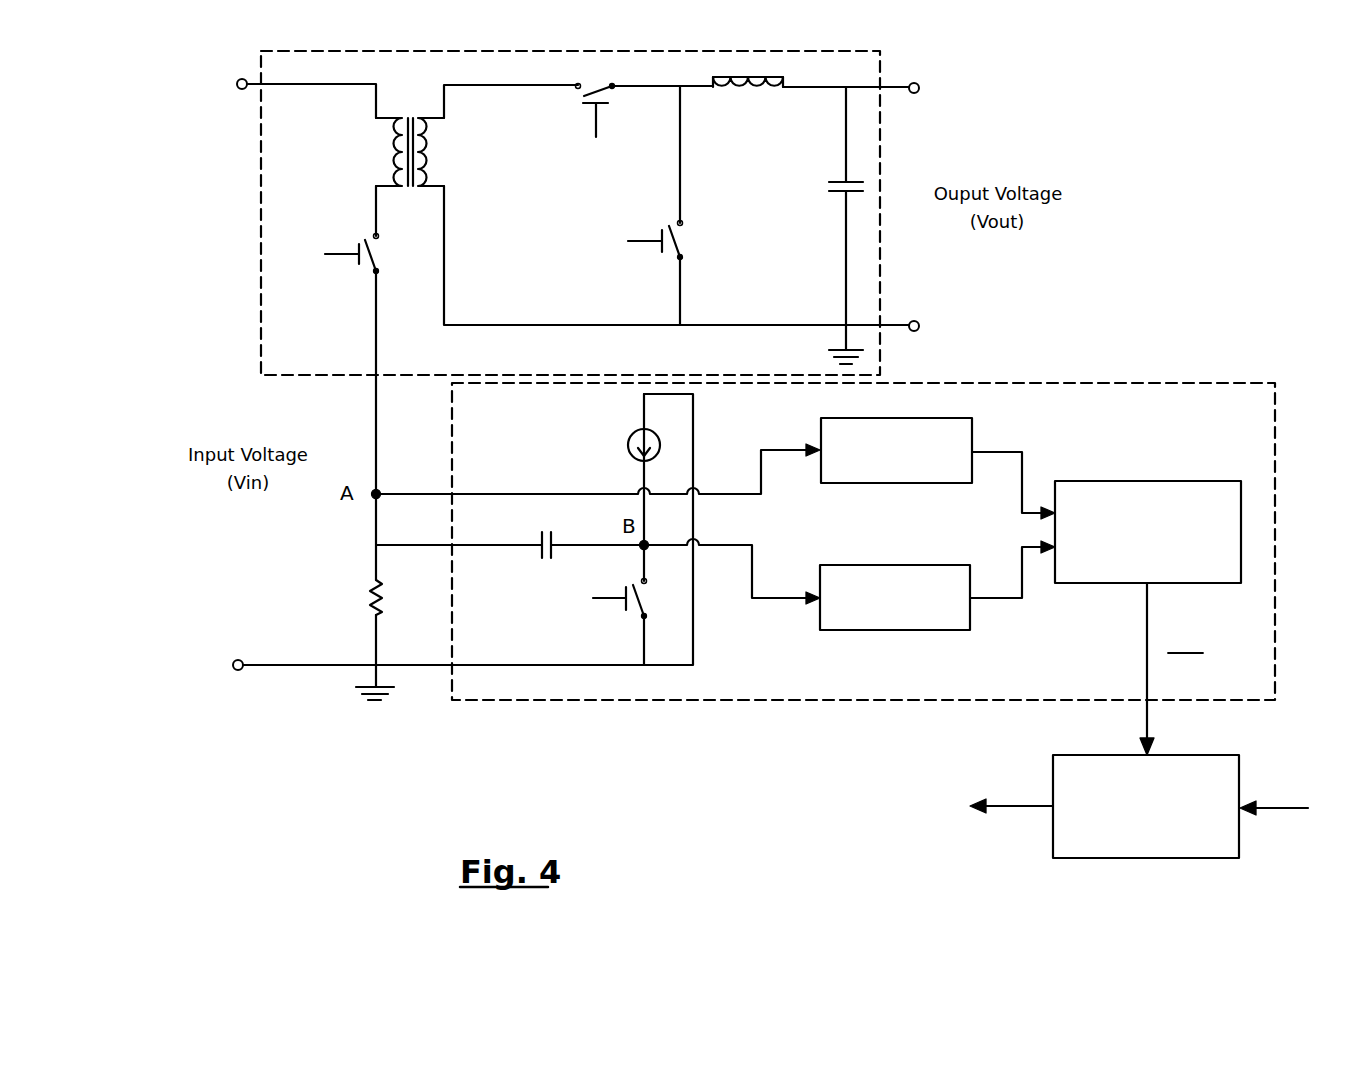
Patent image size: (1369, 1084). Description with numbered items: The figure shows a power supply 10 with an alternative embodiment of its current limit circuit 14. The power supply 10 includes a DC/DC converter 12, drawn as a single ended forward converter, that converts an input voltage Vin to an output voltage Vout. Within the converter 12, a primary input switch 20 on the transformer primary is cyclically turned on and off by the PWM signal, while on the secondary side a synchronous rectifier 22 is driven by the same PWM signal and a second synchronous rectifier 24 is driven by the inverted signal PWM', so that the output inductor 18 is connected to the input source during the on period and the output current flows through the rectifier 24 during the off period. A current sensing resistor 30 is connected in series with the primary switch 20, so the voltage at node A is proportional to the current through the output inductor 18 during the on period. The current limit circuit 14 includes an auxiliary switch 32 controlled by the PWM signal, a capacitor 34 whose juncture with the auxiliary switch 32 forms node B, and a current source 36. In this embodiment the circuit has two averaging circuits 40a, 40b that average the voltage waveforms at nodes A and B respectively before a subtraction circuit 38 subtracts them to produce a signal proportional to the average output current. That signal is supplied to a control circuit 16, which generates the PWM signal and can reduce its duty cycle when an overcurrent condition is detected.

The power supply 10 is at (1198, 217).
The DC/DC converter 12 is at (843, 52).
The current limit circuit 14 is at (1026, 384).
The control circuit 16 is at (1243, 764).
The output inductor 18 is at (768, 87).
The primary input switch 20 is at (363, 278).
The synchronous rectifier 22 is at (585, 80).
The synchronous rectifier 24 is at (687, 237).
The current sensing resistor 30 is at (365, 596).
The auxiliary switch 32 is at (633, 613).
The capacitor 34 is at (541, 562).
The current source 36 is at (627, 440).
The subtraction circuit 38 is at (1177, 478).
The averaging circuit 40a is at (852, 483).
The averaging circuit 40b is at (915, 565).